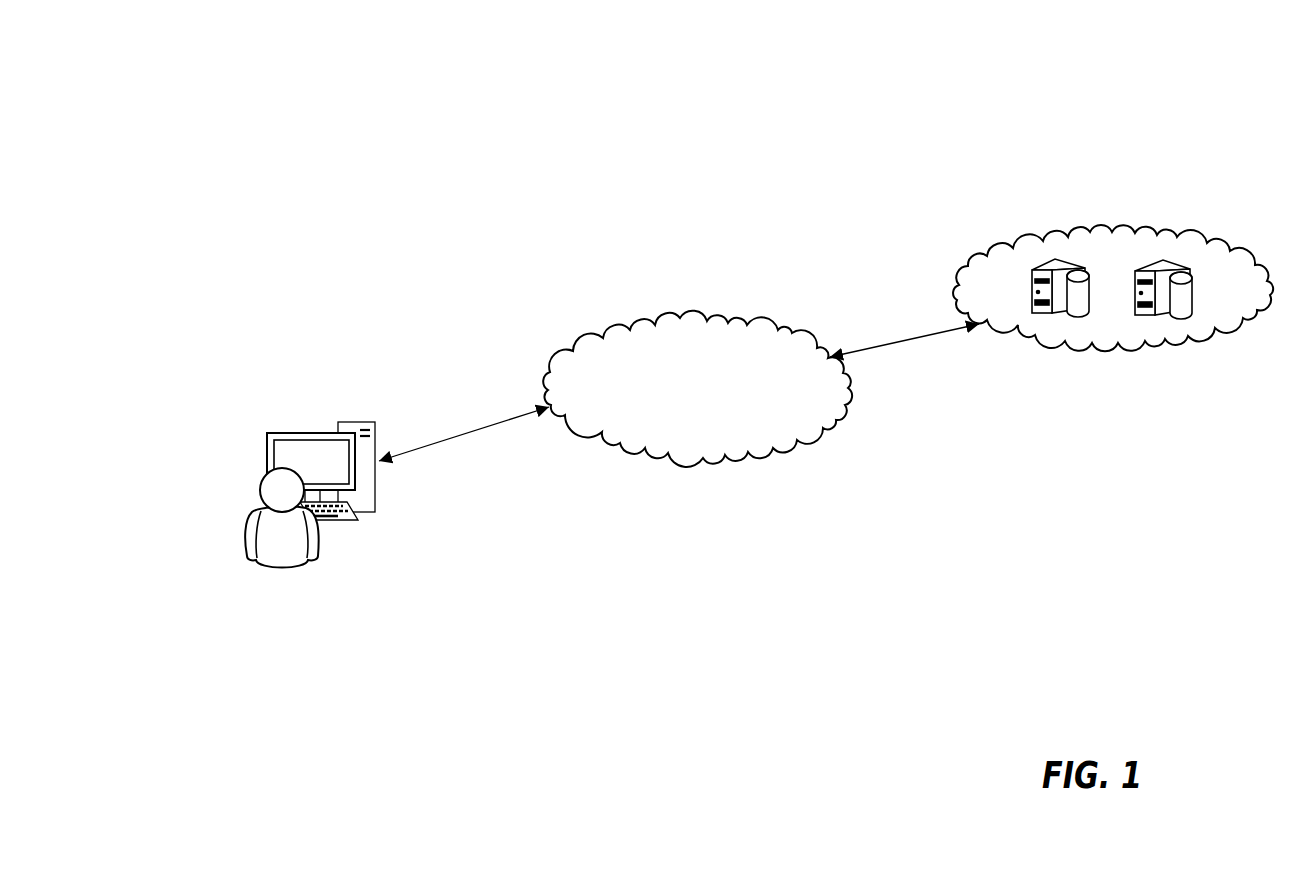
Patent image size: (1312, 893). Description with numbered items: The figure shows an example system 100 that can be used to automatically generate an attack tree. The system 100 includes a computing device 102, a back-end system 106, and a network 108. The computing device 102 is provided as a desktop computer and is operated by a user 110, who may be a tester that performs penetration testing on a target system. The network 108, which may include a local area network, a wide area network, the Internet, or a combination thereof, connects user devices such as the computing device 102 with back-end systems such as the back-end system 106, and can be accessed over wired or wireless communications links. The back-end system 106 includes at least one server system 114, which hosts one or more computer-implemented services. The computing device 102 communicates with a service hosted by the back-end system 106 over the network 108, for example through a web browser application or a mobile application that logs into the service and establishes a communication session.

The example system 100 is at (940, 91).
The computing device 102 is at (352, 423).
The back-end system 106 is at (1086, 233).
The network 108 is at (713, 460).
The user 110 is at (249, 513).
The server system 114 is at (1060, 309).